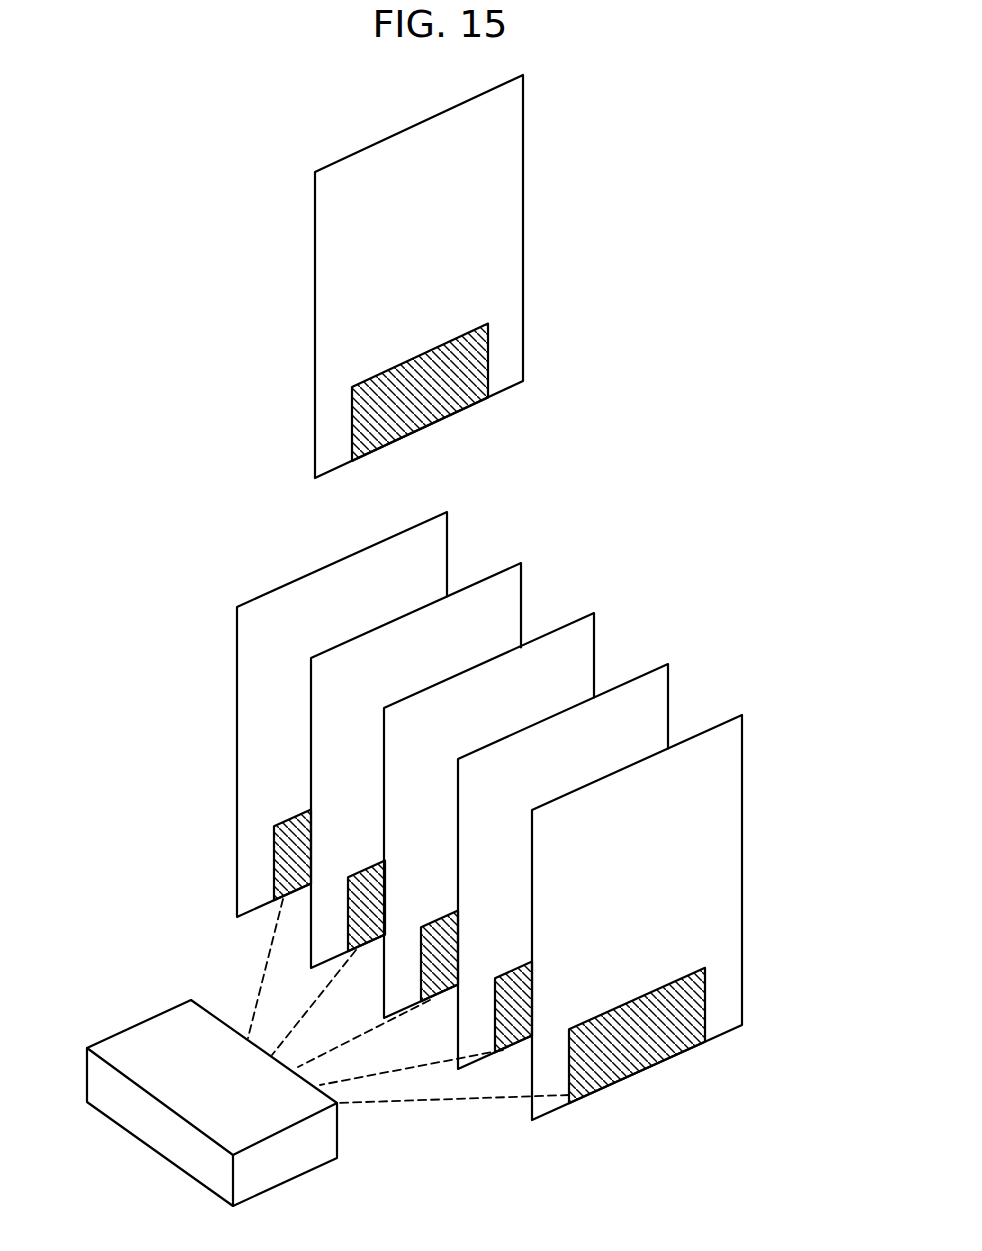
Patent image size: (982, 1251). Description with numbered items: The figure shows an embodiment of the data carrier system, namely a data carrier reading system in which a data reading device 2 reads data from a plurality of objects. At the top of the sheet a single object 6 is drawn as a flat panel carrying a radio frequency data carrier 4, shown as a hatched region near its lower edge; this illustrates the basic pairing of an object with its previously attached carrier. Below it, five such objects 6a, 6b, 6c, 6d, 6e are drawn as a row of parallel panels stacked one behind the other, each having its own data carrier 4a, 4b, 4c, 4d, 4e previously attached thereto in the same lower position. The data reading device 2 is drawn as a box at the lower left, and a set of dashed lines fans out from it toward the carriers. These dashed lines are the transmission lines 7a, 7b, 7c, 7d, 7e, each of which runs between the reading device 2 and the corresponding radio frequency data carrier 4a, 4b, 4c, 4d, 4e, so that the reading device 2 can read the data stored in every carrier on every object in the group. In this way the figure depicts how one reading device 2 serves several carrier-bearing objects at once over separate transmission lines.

The data reading device 2 is at (102, 1090).
The radio frequency data carrier 4 is at (418, 382).
The data carrier 4a is at (286, 830).
The data carrier 4b is at (362, 878).
The data carrier 4c is at (436, 931).
The data carrier 4d is at (510, 981).
The data carrier 4e is at (587, 1036).
The object 6 is at (500, 146).
The object 6a is at (435, 540).
The object 6b is at (509, 591).
The object 6c is at (582, 638).
The object 6d is at (656, 685).
The object 6e is at (730, 748).
The transmission line 7a is at (261, 991).
The transmission line 7b is at (287, 1037).
The transmission line 7c is at (329, 1050).
The transmission line 7d is at (375, 1073).
The transmission line 7e is at (413, 1100).